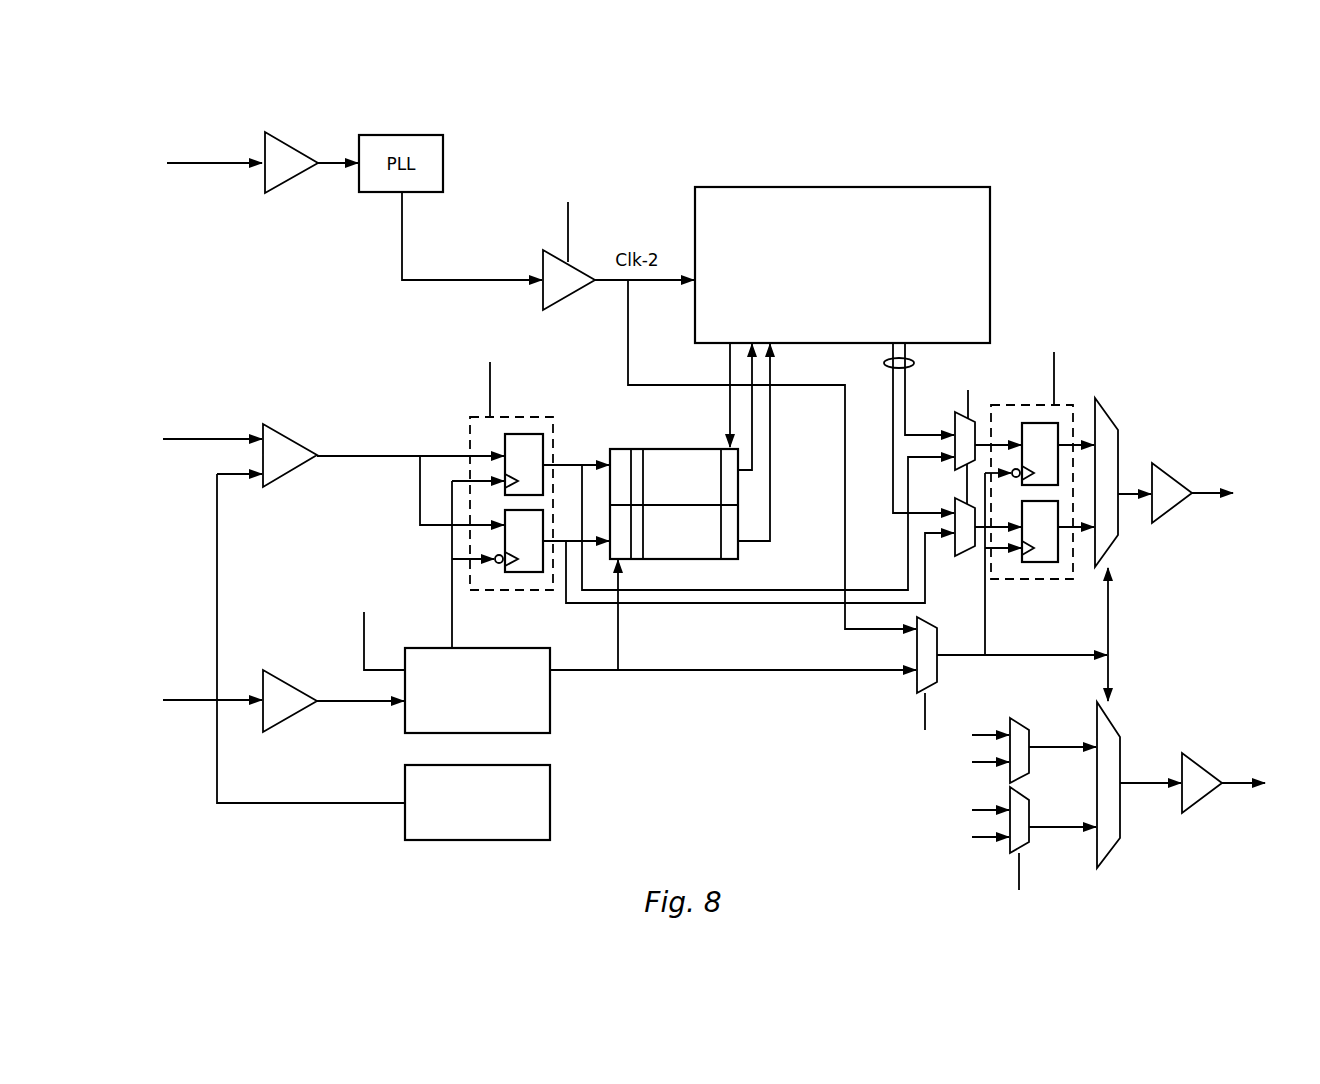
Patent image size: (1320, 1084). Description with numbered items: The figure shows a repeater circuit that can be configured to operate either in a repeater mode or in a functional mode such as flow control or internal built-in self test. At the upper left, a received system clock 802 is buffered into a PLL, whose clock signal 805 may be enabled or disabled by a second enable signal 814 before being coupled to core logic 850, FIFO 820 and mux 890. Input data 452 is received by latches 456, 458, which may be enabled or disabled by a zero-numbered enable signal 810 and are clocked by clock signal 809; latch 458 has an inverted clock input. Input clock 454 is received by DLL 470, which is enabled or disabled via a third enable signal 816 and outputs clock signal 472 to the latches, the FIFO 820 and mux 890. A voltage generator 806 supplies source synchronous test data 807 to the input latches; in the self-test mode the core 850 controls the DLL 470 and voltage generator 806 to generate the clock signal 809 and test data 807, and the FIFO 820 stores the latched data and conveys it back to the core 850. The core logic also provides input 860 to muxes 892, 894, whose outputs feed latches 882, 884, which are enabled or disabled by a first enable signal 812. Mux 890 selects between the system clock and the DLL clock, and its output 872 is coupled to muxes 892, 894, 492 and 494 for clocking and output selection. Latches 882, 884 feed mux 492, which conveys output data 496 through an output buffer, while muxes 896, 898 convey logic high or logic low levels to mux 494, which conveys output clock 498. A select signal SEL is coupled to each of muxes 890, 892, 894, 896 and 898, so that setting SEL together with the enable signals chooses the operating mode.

The system clock 802 is at (225, 165).
The clock signal 805 is at (400, 240).
The enable signal En-2 814 is at (568, 230).
The core logic 850 is at (842, 265).
The core logic input 860 is at (884, 363).
The input data 452 is at (199, 440).
The enable signal En-0 810 is at (490, 385).
The latch 456 is at (531, 445).
The latch 458 is at (531, 574).
The clock signal 809 is at (452, 548).
The FIFO 820 is at (659, 458).
The enable signal En-3 816 is at (364, 632).
The delay locked loop 470 is at (410, 718).
The input clock 454 is at (202, 702).
The clock signal 472 is at (743, 670).
The source synchronous test data 807 is at (268, 804).
The voltage generator 806 is at (481, 841).
The multiplexor 892 is at (959, 413).
The multiplexor 894 is at (967, 550).
The enable signal En-1 812 is at (1054, 372).
The latch 882 is at (1048, 430).
The latch 884 is at (1044, 550).
The multiplexor 492 is at (1112, 420).
The output data 496 is at (1198, 494).
The mux output 872 is at (1009, 655).
The multiplexor 890 is at (917, 686).
The multiplexor 896 is at (1022, 728).
The multiplexor 898 is at (1022, 845).
The multiplexor 494 is at (1120, 838).
The output clock 498 is at (1230, 785).